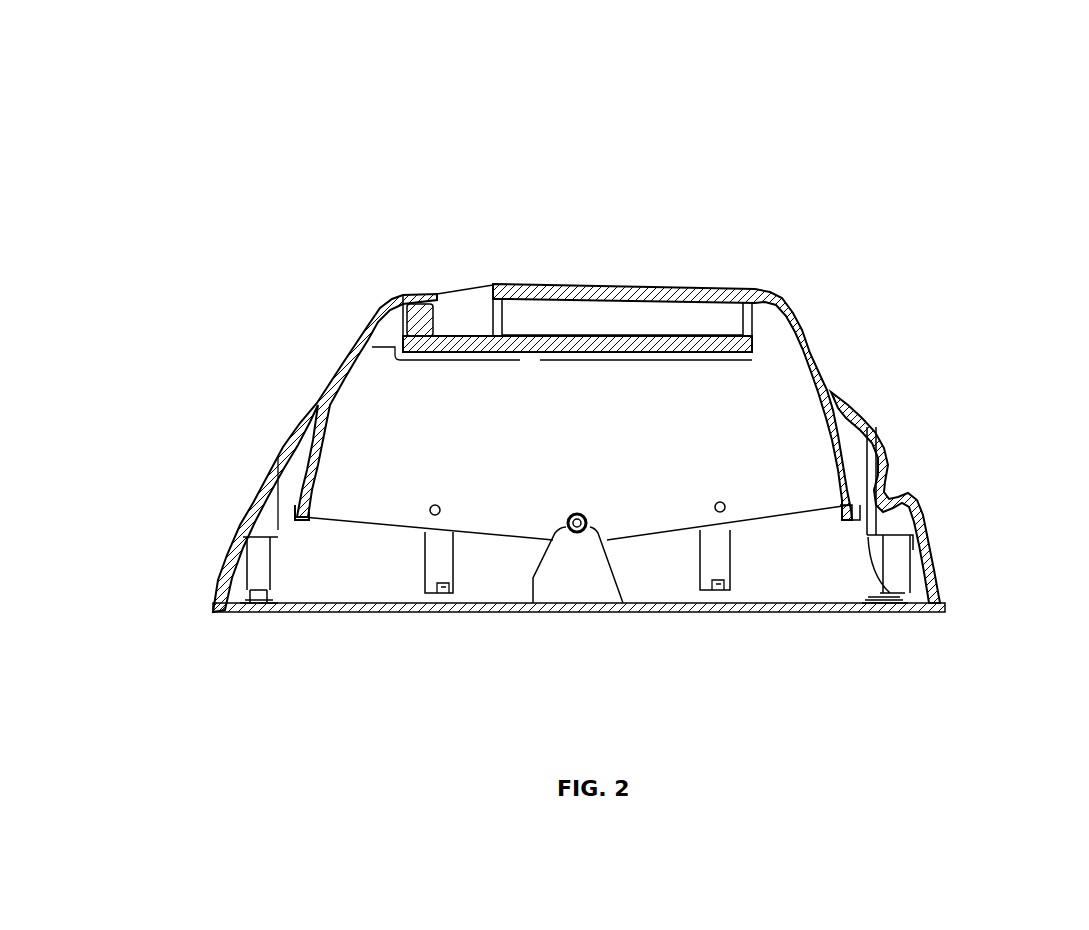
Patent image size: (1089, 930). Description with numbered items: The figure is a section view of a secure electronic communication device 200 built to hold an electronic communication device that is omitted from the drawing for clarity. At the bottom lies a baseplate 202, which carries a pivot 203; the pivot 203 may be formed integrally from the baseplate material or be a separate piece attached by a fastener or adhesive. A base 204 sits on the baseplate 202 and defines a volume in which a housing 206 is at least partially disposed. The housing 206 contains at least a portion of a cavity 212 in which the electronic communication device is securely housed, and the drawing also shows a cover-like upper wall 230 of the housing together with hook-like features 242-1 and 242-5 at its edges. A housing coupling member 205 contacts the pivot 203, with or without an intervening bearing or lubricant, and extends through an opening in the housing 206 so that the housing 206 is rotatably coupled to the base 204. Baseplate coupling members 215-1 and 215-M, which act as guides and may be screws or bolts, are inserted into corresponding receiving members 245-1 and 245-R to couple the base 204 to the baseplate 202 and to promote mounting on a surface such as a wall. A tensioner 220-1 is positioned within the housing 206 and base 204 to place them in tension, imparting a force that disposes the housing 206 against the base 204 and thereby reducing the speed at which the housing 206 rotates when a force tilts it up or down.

The secure electronic communication device 200 is at (85, 50).
The baseplate 202 is at (565, 605).
The pivot 203 is at (580, 538).
The base 204 is at (817, 567).
The housing coupling member 205 is at (597, 533).
The housing 206 is at (370, 373).
The cavity 212 is at (655, 350).
The baseplate coupling member 215-1 is at (895, 560).
The baseplate coupling member 215-M is at (260, 547).
The tensioner 220-1 is at (727, 503).
The cover 230 is at (610, 283).
The retaining hook 242-1 is at (852, 506).
The retaining hook 242-5 is at (307, 520).
The receiving member 245-1 is at (893, 600).
The receiving member 245-R is at (257, 608).